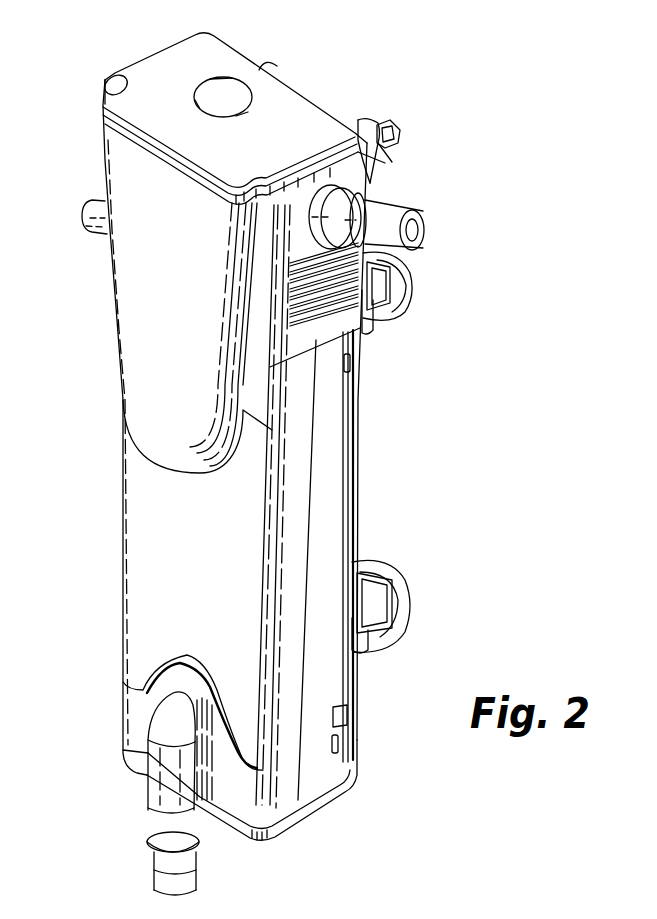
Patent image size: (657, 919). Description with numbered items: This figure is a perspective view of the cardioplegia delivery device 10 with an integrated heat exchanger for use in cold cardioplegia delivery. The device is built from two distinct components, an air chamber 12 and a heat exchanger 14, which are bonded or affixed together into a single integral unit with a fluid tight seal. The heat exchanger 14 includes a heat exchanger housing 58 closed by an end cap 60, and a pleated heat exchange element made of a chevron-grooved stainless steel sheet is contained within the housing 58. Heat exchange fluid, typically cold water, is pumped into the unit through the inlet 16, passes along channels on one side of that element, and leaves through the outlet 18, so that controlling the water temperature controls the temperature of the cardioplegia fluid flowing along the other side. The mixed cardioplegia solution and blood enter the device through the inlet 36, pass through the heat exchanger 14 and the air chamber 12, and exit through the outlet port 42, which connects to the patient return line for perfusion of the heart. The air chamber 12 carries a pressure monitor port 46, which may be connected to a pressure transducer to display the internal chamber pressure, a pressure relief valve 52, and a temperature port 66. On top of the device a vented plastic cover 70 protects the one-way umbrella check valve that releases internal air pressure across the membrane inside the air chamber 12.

The cardioplegia delivery device 10 is at (112, 499).
The air chamber 12 is at (127, 352).
The heat exchanger 14 is at (130, 617).
The inlet 16 is at (394, 318).
The outlet 18 is at (395, 632).
The inlet 36 is at (150, 867).
The outlet port 42 is at (92, 228).
The pressure monitor port 46 is at (265, 68).
The pressure relief valve 52 is at (370, 119).
The heat exchanger housing 58 is at (332, 769).
The end cap 60 is at (300, 820).
The temperature port 66 is at (377, 198).
The vented plastic cover 70 is at (225, 78).